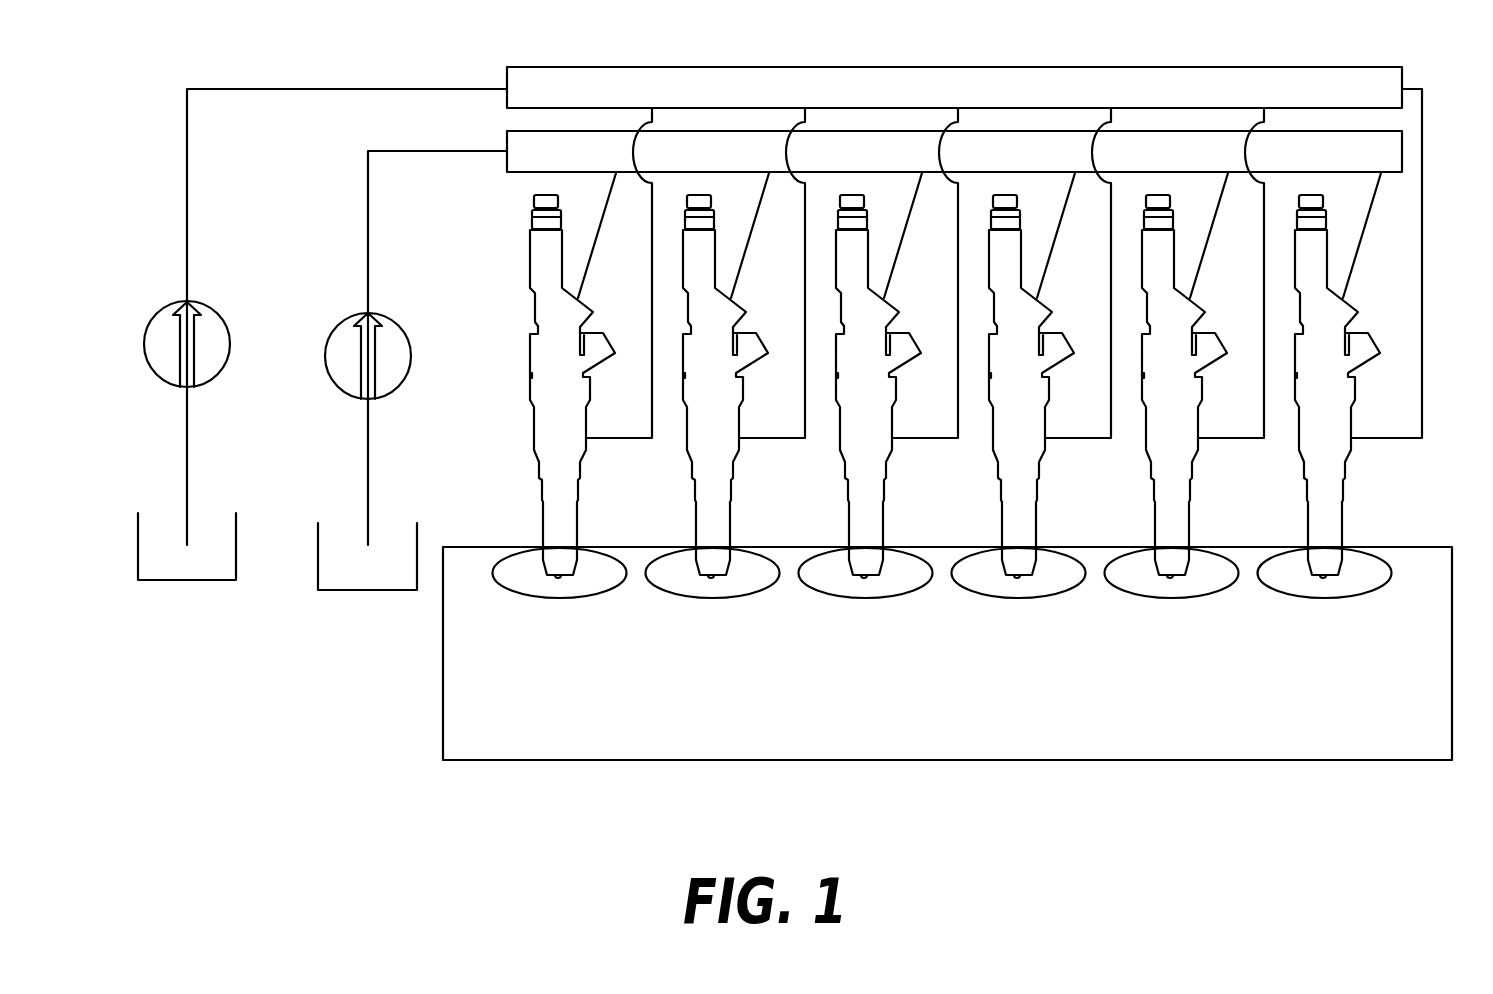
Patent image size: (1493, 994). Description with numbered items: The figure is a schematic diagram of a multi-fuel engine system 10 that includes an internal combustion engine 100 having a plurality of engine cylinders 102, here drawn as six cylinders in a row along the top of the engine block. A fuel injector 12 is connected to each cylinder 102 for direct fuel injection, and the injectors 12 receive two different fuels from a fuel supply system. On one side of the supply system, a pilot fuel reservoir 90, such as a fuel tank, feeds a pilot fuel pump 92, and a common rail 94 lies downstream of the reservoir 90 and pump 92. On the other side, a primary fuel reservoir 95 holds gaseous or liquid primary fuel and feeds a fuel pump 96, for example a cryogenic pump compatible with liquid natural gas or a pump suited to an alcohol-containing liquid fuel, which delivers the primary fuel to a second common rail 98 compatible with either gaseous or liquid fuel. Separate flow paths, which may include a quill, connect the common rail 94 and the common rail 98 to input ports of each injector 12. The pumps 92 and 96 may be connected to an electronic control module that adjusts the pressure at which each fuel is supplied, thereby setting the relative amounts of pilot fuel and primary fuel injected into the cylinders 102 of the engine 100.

The multi-fuel engine system 10 is at (156, 115).
The fuel injector 12 is at (499, 338).
The pilot fuel reservoir 90 is at (326, 557).
The pilot fuel pump 92 is at (325, 357).
The common rail 94 is at (512, 163).
The primary fuel reservoir 95 is at (143, 557).
The fuel pump 96 is at (143, 343).
The common rail 98 is at (512, 82).
The internal combustion engine 100 is at (447, 732).
The engine cylinder 102 is at (500, 621).